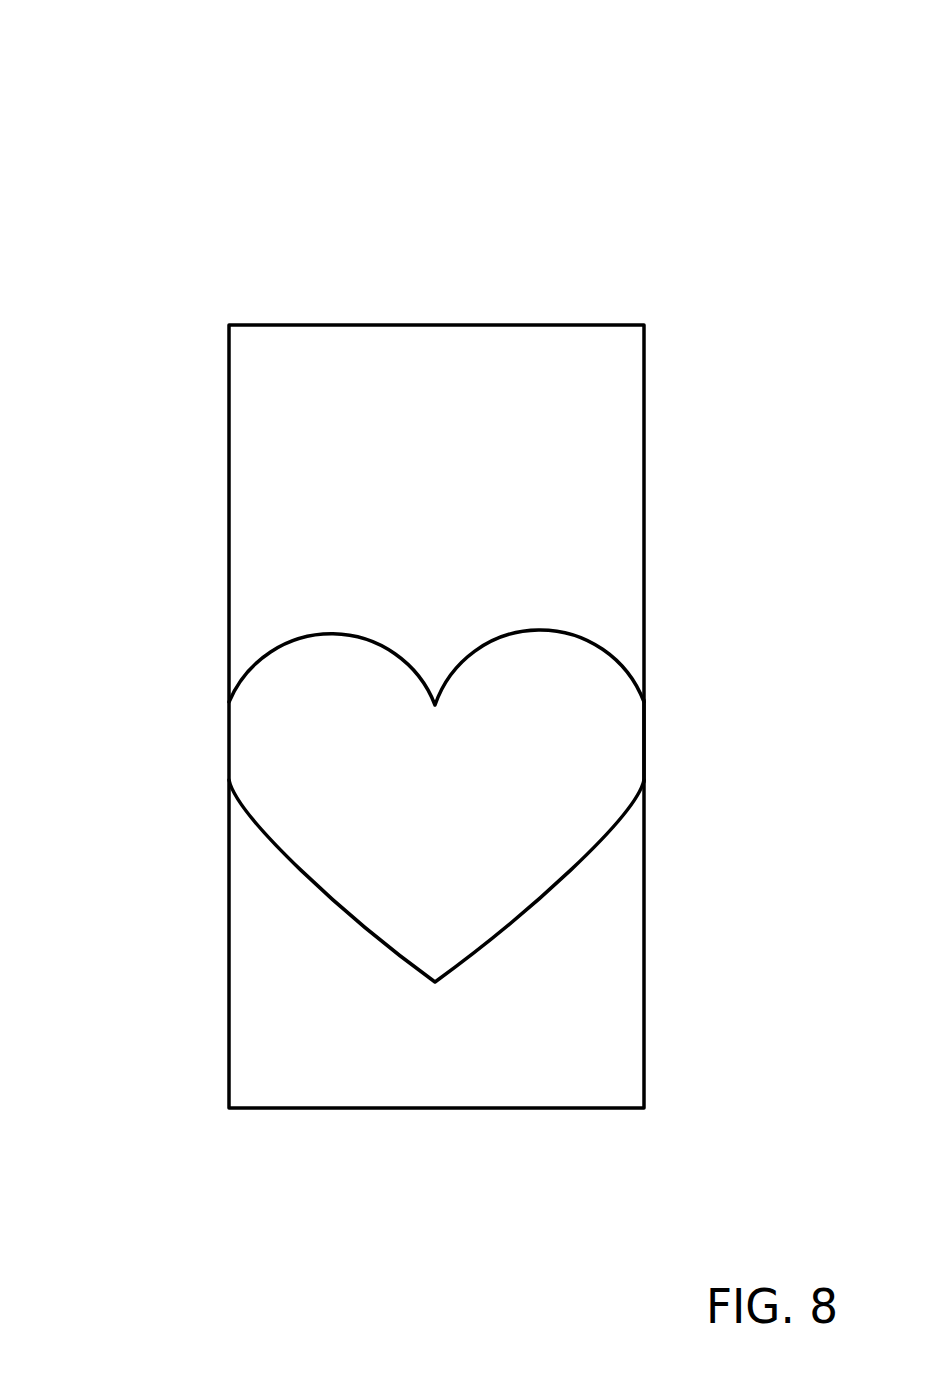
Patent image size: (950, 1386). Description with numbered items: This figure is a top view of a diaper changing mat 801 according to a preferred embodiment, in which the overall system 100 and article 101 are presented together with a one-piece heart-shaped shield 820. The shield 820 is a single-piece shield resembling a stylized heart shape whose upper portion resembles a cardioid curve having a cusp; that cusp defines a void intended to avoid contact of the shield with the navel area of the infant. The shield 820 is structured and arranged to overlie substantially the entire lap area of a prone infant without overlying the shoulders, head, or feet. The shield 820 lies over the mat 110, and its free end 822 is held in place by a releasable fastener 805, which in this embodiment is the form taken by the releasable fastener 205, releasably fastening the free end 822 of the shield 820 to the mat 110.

The absorbent article 100 is at (162, 83).
The article body 101 is at (166, 148).
The diaper changing mat 801 is at (166, 213).
The mat 110 is at (430, 342).
The one-piece heart-shaped shield 820 is at (627, 632).
The releasable fastener 205 is at (655, 712).
The free end 822 is at (643, 722).
The releasable fastener 805 is at (644, 741).